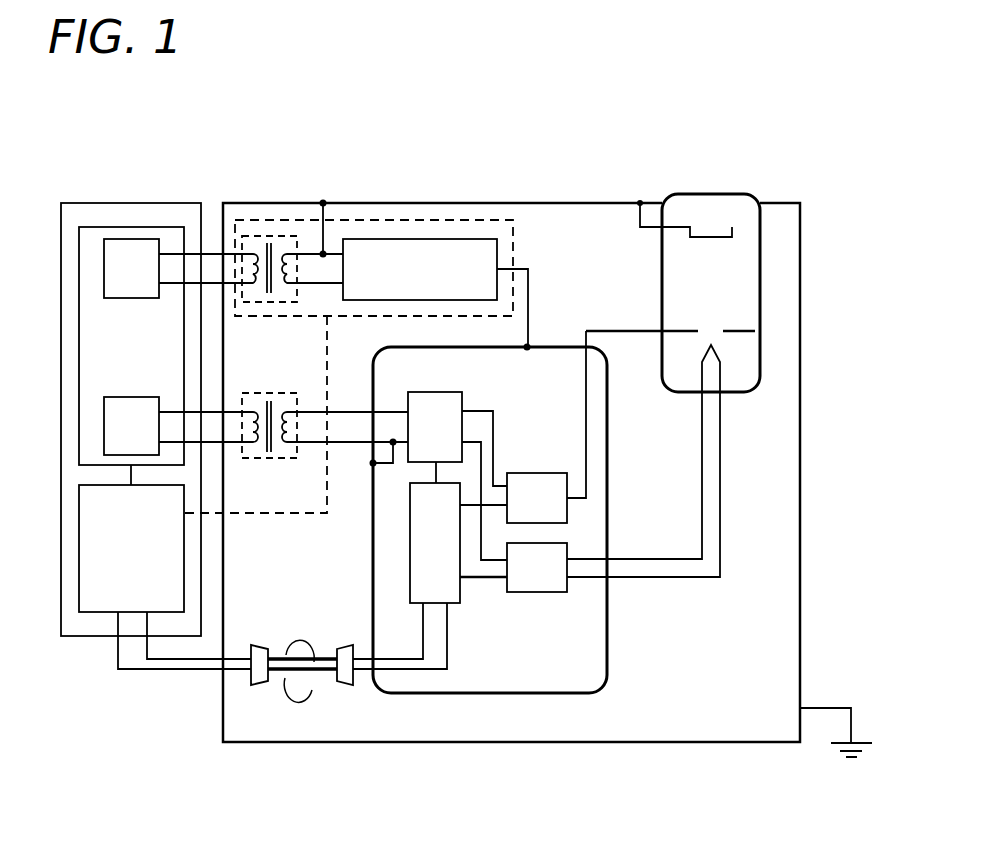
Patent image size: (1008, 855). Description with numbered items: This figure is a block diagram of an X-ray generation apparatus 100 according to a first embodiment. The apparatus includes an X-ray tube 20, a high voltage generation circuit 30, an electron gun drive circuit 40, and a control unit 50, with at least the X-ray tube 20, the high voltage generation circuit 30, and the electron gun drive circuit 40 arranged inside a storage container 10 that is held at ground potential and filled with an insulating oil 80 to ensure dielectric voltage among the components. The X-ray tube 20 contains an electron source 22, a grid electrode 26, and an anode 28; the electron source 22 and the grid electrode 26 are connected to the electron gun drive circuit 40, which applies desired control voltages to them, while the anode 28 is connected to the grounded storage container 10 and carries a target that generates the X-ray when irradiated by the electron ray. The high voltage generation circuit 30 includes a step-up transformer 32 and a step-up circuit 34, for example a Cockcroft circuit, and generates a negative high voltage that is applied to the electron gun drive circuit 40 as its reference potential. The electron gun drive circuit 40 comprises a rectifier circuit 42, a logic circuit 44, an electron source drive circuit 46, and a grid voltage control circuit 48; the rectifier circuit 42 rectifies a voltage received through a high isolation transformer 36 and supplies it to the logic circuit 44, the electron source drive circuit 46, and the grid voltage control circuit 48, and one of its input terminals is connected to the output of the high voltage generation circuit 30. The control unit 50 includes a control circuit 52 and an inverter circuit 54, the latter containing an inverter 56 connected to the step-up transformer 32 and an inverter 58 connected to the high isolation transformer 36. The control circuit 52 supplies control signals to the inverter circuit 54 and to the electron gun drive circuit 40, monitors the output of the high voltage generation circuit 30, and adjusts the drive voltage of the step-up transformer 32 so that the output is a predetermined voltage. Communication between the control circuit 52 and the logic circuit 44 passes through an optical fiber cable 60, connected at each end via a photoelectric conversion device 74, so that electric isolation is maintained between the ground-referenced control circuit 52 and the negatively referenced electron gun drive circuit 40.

The storage container 10 is at (720, 743).
The X-ray tube 20 is at (760, 278).
The electron source 22 is at (722, 350).
The grid electrode 26 is at (683, 331).
The anode 28 is at (734, 227).
The high voltage generation circuit 30 is at (458, 220).
The step-up transformer 32 is at (270, 236).
The step-up circuit 34 is at (400, 239).
The high isolation transformer 36 is at (268, 393).
The electron gun drive circuit 40 is at (607, 630).
The rectifier circuit 42 is at (463, 398).
The logic circuit 44 is at (410, 563).
The electron source drive circuit 46 is at (530, 592).
The grid voltage control circuit 48 is at (532, 473).
The control unit 50 is at (100, 203).
The control circuit 52 is at (95, 612).
The inverter circuit 54 is at (148, 227).
The inverter 56 is at (116, 298).
The inverter 58 is at (150, 397).
The optical fiber cable 60 is at (305, 700).
The photoelectric conversion device 74 is at (255, 645).
The insulating oil 80 is at (720, 703).
The X-ray generation apparatus 100 is at (594, 130).